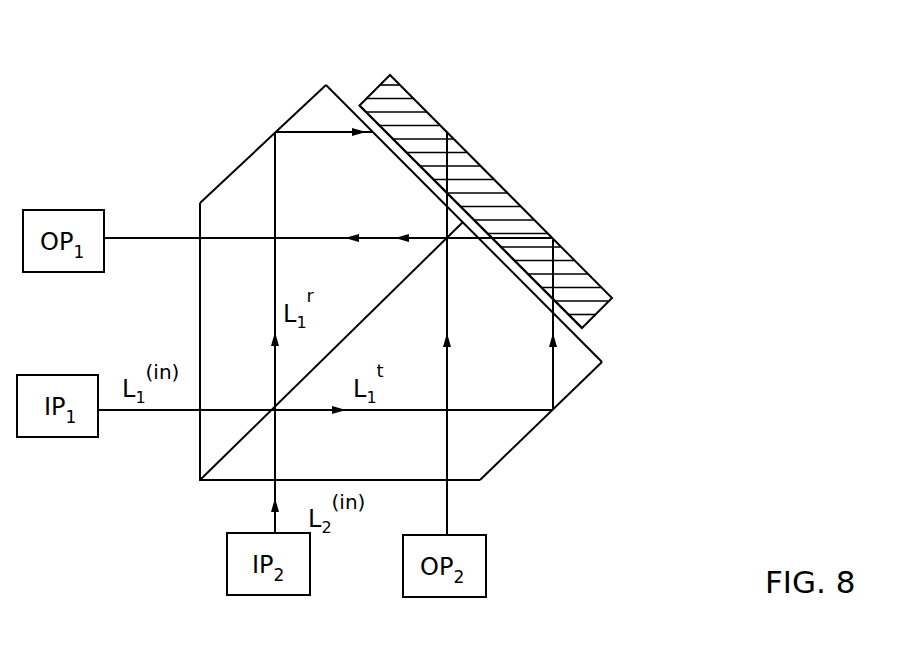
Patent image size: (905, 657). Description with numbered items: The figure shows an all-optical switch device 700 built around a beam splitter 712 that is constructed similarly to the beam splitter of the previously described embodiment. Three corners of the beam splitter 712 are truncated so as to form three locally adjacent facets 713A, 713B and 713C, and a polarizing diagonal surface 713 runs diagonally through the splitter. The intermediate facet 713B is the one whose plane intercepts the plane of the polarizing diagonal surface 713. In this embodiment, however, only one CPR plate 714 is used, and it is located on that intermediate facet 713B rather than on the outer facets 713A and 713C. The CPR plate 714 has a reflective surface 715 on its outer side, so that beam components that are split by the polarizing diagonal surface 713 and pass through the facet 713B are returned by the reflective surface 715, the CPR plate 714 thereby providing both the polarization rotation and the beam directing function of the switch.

The all-optical switch device 700 is at (238, 96).
The beam splitter 712 is at (288, 112).
The polarizing diagonal surface 713 is at (388, 302).
The facet 713A is at (228, 176).
The facet 713B is at (342, 98).
The facet 713C is at (567, 397).
The CPR plate 714 is at (556, 231).
The reflective surface 715 is at (497, 182).